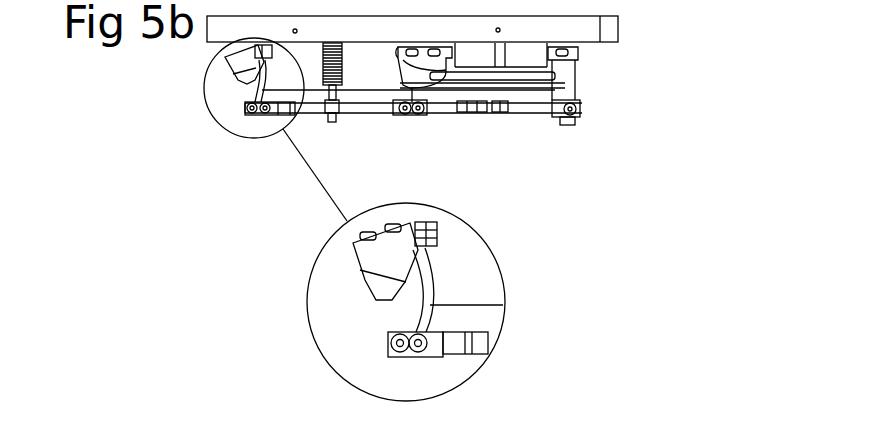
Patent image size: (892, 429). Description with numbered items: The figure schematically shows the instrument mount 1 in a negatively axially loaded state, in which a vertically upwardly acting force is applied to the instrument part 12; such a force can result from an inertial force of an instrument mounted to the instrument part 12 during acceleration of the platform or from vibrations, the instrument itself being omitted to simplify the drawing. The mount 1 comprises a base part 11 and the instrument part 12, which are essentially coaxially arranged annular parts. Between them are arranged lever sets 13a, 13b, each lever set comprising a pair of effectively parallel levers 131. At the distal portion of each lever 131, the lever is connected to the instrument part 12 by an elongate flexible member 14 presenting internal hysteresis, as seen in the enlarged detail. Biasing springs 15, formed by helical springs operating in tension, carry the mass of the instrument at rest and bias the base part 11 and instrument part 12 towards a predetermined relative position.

The instrument mount 1 is at (733, 50).
The base part 11 is at (600, 32).
The instrument part 12 is at (582, 112).
The lever set 13a is at (520, 83).
The lever set 13b is at (238, 65).
The lever 131 is at (378, 252).
The elongate flexible member 14 is at (432, 282).
The biasing spring 15 is at (341, 70).